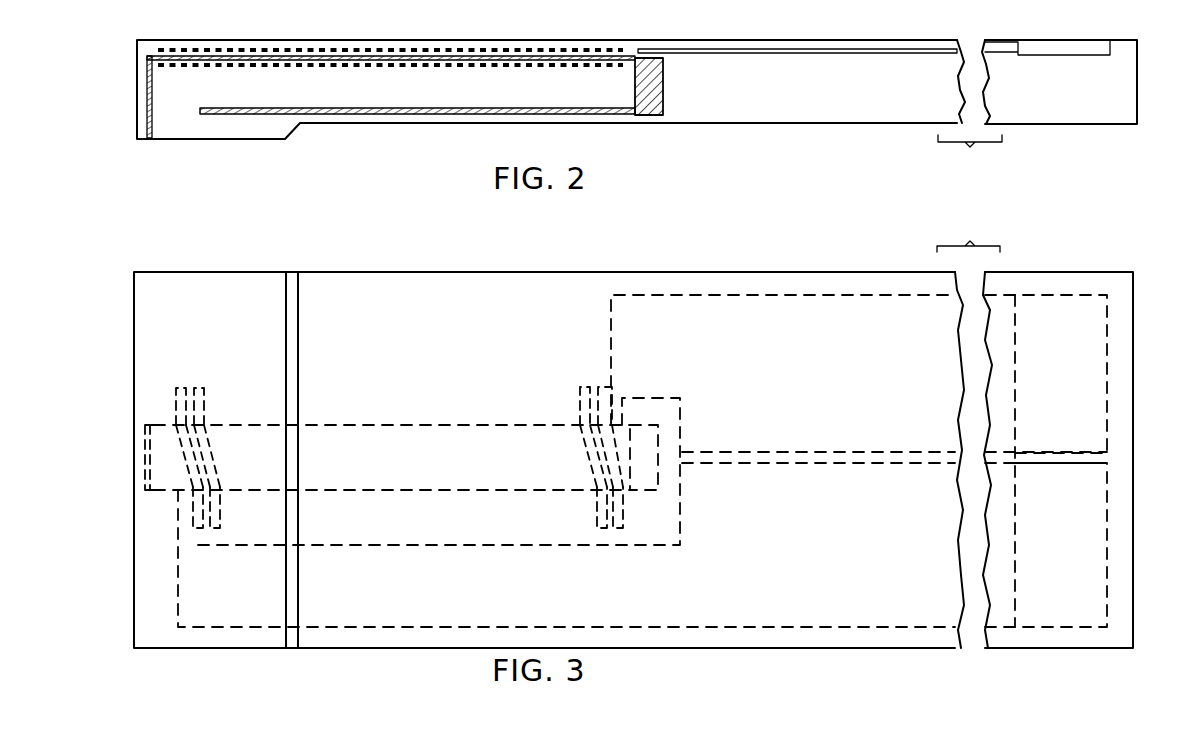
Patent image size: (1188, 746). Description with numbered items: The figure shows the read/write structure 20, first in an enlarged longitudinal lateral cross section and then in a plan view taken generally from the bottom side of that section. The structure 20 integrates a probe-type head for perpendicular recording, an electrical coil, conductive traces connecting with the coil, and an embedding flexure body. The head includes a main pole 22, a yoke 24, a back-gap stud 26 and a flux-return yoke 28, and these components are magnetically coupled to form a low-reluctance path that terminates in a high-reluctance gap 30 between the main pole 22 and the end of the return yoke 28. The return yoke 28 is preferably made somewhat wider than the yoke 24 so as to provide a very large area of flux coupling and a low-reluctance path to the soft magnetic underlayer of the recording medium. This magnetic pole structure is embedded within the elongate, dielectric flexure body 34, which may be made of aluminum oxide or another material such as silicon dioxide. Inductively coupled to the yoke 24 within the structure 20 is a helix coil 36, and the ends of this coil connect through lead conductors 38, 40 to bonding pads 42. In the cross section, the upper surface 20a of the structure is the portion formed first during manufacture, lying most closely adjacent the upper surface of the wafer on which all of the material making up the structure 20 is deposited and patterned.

In FIG. 2, the read/write structure 20 is at (804, 15).
In FIG. 3, the read/write structure 20 is at (789, 242).
In FIG. 2, the upper surface 20a is at (668, 40).
In FIG. 2, the main pole 22 is at (147, 107).
In FIG. 3, the main pole 22 is at (140, 465).
In FIG. 2, the yoke 24 is at (243, 56).
In FIG. 3, the yoke 24 is at (323, 424).
In FIG. 2, the back-gap stud 26 is at (664, 86).
In FIG. 3, the back-gap stud 26 is at (640, 425).
In FIG. 2, the flux-return yoke 28 is at (382, 114).
In FIG. 2, the high-reluctance gap 30 is at (188, 126).
In FIG. 2, the flexure body 34 is at (790, 110).
In FIG. 3, the flexure body 34 is at (553, 282).
In FIG. 2, the helix coil 36 is at (328, 50).
In FIG. 3, the helix coil 36 is at (205, 405).
In FIG. 3, the lead conductor 38 is at (812, 293).
In FIG. 2, the lead conductor 40 is at (858, 50).
In FIG. 3, the lead conductor 40 is at (805, 628).
In FIG. 2, the bonding pads 42 is at (1063, 47).
In FIG. 3, the bonding pads 42 is at (1107, 478).